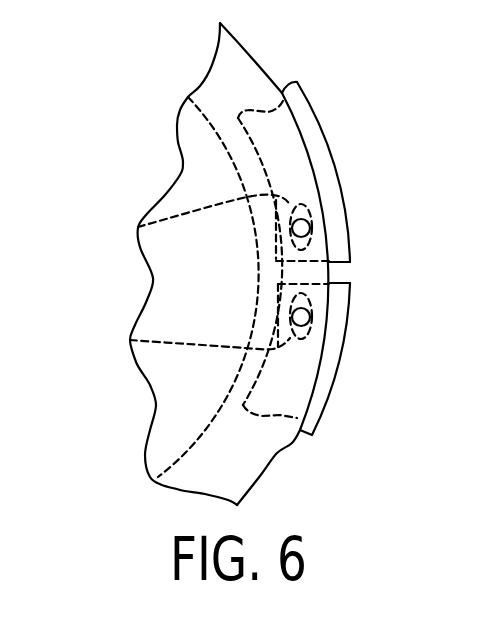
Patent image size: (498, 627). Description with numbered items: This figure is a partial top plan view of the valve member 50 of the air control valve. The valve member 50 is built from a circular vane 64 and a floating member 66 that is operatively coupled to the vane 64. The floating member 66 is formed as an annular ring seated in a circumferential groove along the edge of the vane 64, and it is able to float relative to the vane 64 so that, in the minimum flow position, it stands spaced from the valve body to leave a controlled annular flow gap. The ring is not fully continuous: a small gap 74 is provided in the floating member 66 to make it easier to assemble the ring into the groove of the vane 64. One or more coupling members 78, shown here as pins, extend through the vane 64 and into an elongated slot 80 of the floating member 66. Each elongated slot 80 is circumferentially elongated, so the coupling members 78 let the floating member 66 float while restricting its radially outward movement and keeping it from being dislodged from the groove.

The valve member 50 is at (112, 54).
The vane 64 is at (193, 395).
The floating member 66 is at (318, 405).
The gap 74 is at (342, 270).
The coupling members 78 is at (308, 227).
The elongated slot 80 is at (138, 227).